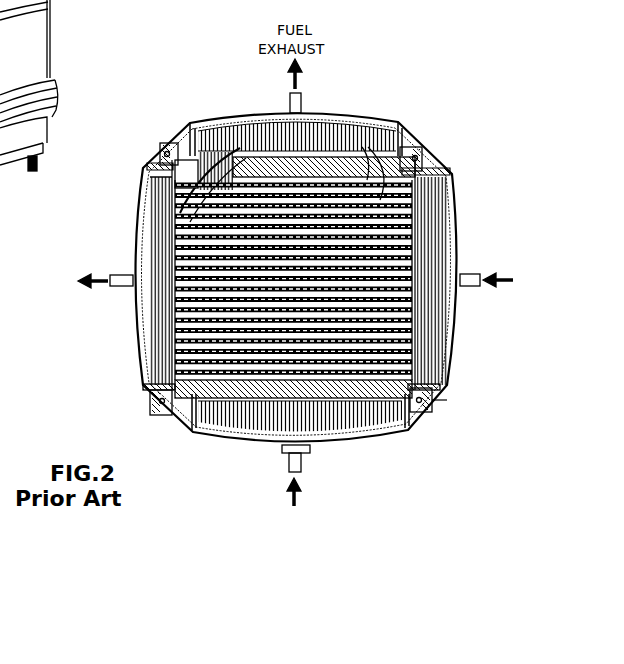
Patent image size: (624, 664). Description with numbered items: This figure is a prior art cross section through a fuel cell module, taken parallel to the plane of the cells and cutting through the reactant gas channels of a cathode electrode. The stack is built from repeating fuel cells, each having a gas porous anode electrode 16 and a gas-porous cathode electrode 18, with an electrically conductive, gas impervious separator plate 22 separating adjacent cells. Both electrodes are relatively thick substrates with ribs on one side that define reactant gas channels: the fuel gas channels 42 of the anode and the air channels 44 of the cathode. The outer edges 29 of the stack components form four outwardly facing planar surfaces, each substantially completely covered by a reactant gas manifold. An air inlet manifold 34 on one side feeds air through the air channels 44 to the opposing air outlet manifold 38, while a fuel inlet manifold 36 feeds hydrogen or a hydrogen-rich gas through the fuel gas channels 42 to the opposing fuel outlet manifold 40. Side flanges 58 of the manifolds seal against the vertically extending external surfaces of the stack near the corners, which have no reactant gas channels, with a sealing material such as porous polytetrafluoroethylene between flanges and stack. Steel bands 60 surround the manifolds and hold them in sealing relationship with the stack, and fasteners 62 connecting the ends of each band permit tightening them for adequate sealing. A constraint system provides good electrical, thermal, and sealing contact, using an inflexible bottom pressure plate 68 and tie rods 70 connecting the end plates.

The anode electrode 16 is at (186, 174).
The cathode electrode 18 is at (176, 354).
The separator plate 22 is at (182, 206).
The outer edges 29 is at (292, 157).
The air inlet manifold 34 is at (458, 296).
The fuel inlet manifold 36 is at (286, 440).
The air outlet manifold 38 is at (141, 352).
The fuel outlet manifold 40 is at (346, 117).
The fuel gas channels 42 is at (208, 158).
The air channels 44 is at (363, 166).
The side flanges 58 is at (405, 138).
The steel bands 60 is at (148, 400).
The fasteners 62 is at (290, 450).
The bottom pressure plate 68 is at (430, 414).
The tie rods 70 is at (425, 147).